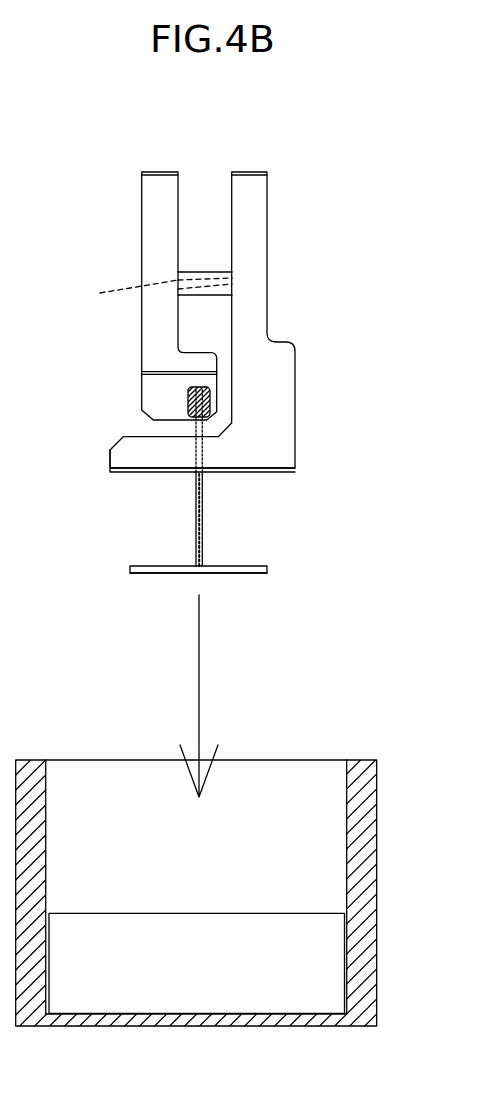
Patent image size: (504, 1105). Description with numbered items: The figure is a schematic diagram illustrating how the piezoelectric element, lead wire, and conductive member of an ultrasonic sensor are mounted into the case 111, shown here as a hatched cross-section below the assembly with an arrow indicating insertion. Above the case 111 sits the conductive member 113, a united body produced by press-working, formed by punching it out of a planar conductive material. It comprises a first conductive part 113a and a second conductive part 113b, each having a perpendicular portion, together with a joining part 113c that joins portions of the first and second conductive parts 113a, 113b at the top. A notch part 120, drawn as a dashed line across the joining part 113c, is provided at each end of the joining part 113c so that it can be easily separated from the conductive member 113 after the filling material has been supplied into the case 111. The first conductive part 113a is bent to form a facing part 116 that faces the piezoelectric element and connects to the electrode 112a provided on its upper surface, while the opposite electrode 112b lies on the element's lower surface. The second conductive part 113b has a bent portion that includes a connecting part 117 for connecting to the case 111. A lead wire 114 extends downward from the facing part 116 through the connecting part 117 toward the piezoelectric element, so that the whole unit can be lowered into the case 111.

The case 111 is at (377, 912).
The electrode 112a is at (147, 567).
The electrode 112b is at (147, 577).
The conductive member 113 is at (207, 297).
The first conductive part 113a is at (148, 205).
The second conductive part 113b is at (262, 242).
The joining part 113c is at (208, 277).
The lead wire 114 is at (203, 525).
The facing part 116 is at (148, 382).
The connecting part 117 is at (256, 472).
The notch part 120 is at (147, 294).